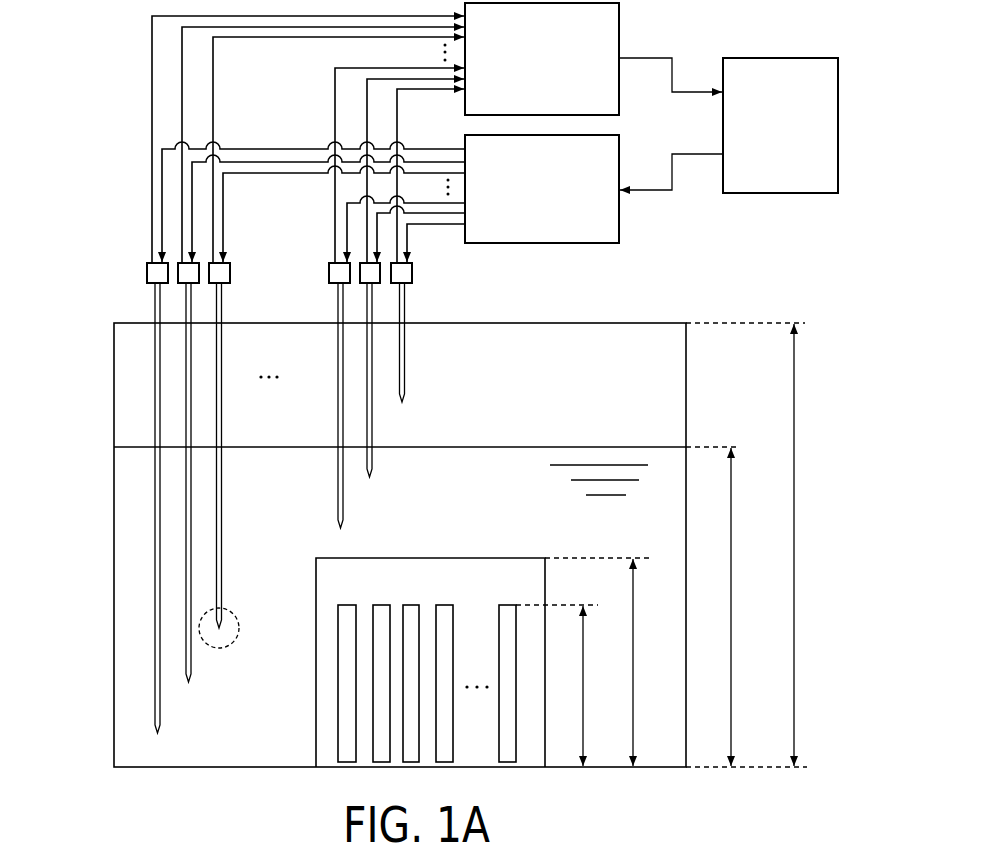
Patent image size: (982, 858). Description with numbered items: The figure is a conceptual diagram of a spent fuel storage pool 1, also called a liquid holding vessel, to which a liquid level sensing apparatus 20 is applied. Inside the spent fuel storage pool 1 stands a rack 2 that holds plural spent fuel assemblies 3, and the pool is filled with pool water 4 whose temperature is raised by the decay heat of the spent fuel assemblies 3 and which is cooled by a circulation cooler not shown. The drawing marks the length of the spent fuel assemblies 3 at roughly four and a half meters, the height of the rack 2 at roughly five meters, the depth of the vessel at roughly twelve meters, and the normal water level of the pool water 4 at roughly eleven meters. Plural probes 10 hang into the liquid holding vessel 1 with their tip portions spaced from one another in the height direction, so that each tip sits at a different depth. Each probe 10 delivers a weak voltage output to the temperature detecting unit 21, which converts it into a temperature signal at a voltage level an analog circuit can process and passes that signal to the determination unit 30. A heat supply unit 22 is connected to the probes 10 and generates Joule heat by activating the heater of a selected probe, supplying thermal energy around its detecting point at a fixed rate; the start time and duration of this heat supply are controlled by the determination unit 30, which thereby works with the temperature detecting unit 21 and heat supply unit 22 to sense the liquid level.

The liquid level sensing apparatus 20 is at (62, 60).
The temperature detecting unit 21 is at (619, 25).
The heat supply unit 22 is at (619, 232).
The determination unit 30 is at (780, 58).
The spent fuel storage pool 1 is at (525, 323).
The rack 2 is at (460, 558).
The spent fuel assemblies 3 is at (347, 605).
The pool water 4 is at (498, 466).
The probes 10 is at (312, 502).